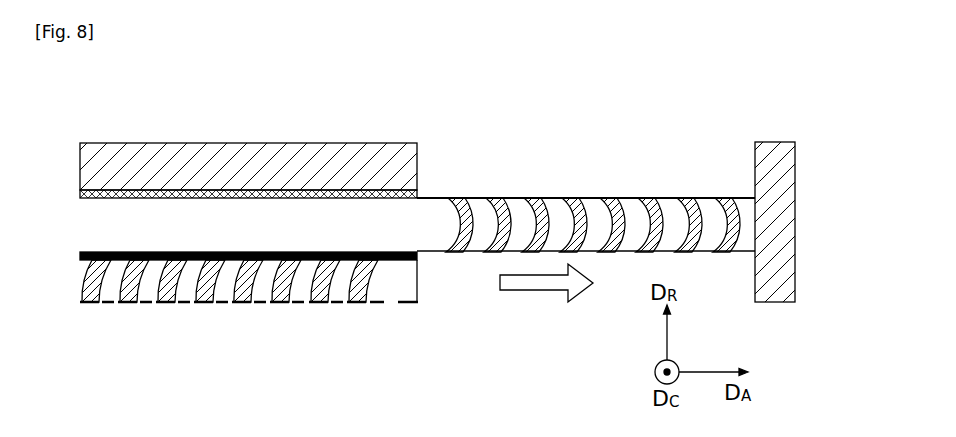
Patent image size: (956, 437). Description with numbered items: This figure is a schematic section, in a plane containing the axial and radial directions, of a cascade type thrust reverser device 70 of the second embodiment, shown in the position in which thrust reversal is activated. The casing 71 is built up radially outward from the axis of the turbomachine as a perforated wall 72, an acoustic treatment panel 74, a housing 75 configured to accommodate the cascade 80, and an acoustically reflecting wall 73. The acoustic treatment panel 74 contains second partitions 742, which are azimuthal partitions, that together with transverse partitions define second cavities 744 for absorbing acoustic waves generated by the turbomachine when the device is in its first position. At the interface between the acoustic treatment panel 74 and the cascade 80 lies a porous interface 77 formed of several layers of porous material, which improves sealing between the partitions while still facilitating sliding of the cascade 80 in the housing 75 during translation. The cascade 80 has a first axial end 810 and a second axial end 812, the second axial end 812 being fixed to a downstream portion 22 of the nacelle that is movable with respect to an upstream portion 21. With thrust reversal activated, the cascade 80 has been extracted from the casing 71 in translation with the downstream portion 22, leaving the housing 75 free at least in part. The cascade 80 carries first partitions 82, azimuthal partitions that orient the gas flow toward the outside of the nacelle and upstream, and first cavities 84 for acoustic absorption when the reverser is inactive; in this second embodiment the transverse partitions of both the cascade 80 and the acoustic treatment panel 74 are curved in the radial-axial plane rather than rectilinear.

The upstream portion 21 is at (319, 150).
The downstream portion 22 is at (790, 168).
The thrust reverser device 70 is at (421, 197).
The casing 71 is at (243, 153).
The perforated wall 72 is at (229, 300).
The acoustically reflecting wall 73 is at (80, 194).
The acoustic treatment panel 74 is at (386, 284).
The housing 75 is at (148, 226).
The porous interface 77 is at (80, 256).
The cascade 80 is at (594, 185).
The first partitions 82 is at (519, 197).
The first cavities 84 is at (636, 227).
The second partitions 742 is at (171, 305).
The second cavities 744 is at (264, 284).
The first axial end 810 is at (422, 193).
The second axial end 812 is at (748, 192).